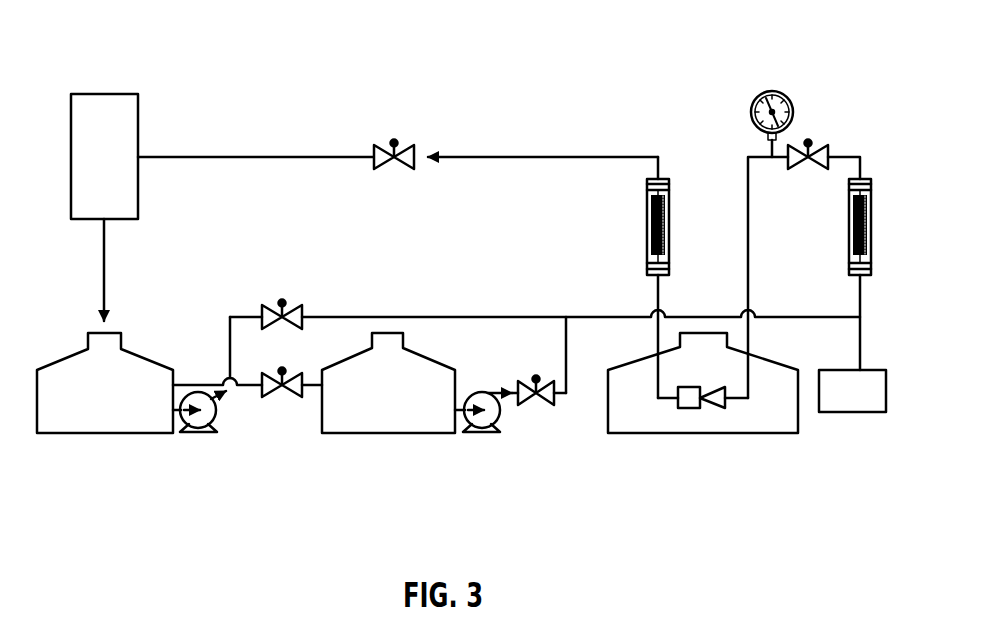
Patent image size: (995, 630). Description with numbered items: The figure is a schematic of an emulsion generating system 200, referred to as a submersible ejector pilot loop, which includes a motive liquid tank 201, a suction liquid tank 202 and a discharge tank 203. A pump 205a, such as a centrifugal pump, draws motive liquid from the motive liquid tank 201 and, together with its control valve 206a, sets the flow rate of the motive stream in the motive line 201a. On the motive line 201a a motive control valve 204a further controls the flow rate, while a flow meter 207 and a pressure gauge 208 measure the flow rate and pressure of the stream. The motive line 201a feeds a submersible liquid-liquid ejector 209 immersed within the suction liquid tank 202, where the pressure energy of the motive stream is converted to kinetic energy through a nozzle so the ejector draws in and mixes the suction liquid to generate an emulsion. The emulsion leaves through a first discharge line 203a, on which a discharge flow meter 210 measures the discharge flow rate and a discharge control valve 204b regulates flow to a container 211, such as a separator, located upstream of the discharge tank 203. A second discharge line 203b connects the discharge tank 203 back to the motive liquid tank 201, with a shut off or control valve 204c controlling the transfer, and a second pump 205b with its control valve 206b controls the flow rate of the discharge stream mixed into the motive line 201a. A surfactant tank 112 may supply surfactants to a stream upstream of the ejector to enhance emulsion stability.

The emulsion generating system 200 is at (254, 62).
The container 211 is at (126, 172).
The discharge tank 203 is at (126, 397).
The motive liquid tank 201 is at (409, 397).
The suction liquid tank 202 is at (655, 428).
The surfactant tank 112 is at (874, 407).
The motive line 201a is at (595, 314).
The first discharge line 203a is at (526, 155).
The second discharge line 203b is at (243, 388).
The motive control valve 204a is at (830, 152).
The discharge control valve 204b is at (374, 153).
The shut off valve or control valve 204c is at (273, 397).
The pump 205a is at (480, 422).
The pump 205b is at (202, 424).
The control valve 206a is at (538, 405).
The control valve 206b is at (262, 312).
The flow meter 207 is at (848, 202).
The pressure gauge 208 is at (770, 91).
The submersible liquid-liquid ejector 209 is at (688, 410).
The discharge flow meter 210 is at (647, 200).